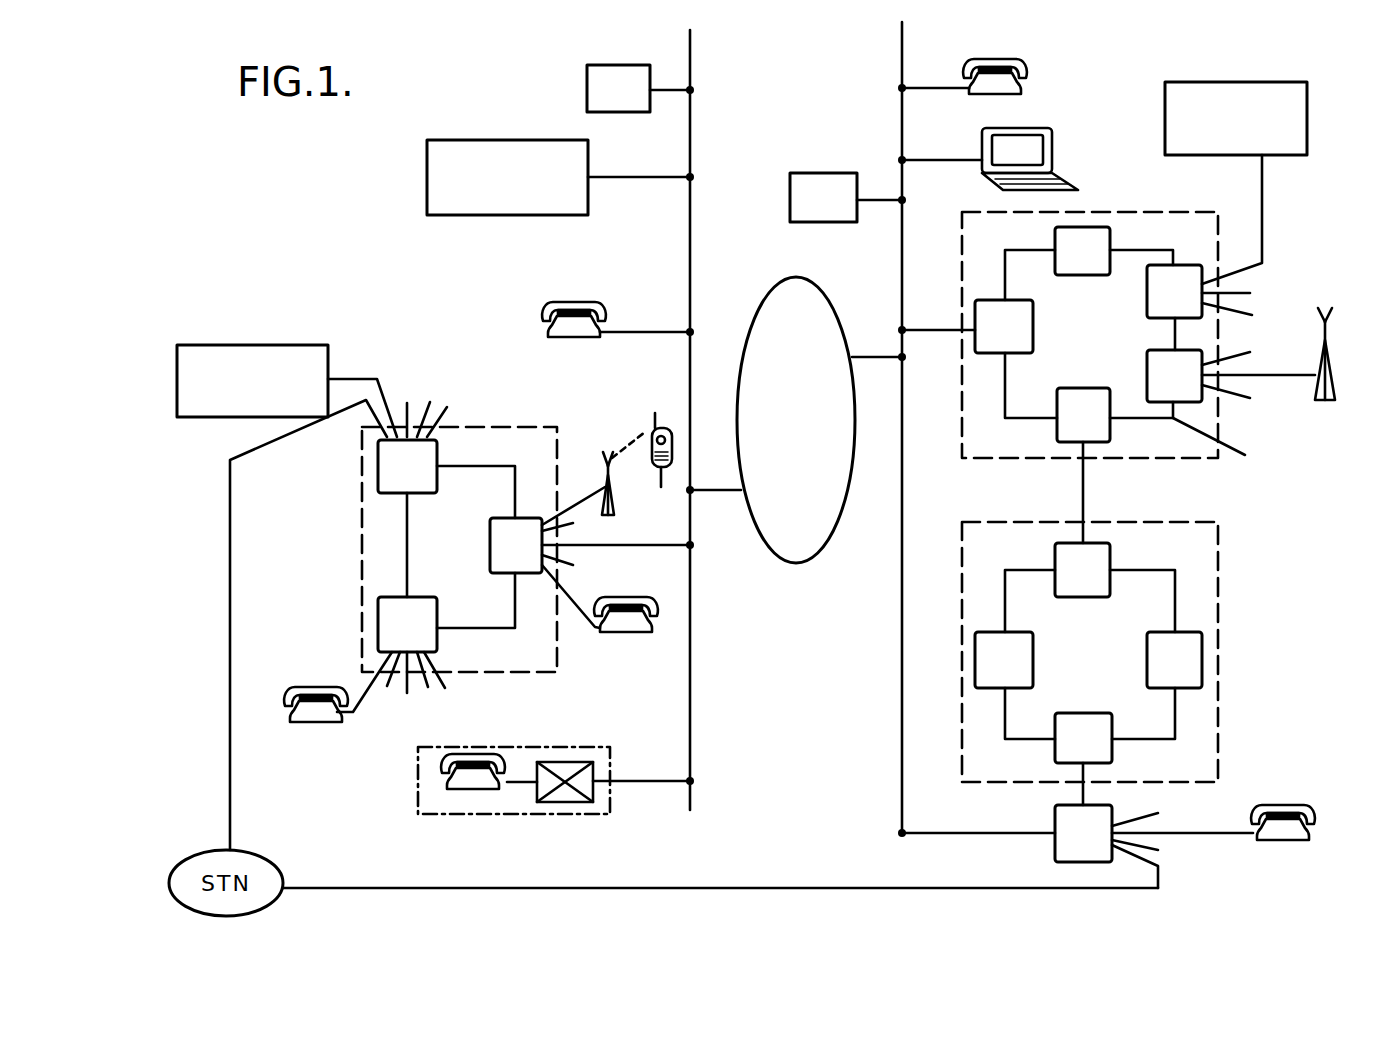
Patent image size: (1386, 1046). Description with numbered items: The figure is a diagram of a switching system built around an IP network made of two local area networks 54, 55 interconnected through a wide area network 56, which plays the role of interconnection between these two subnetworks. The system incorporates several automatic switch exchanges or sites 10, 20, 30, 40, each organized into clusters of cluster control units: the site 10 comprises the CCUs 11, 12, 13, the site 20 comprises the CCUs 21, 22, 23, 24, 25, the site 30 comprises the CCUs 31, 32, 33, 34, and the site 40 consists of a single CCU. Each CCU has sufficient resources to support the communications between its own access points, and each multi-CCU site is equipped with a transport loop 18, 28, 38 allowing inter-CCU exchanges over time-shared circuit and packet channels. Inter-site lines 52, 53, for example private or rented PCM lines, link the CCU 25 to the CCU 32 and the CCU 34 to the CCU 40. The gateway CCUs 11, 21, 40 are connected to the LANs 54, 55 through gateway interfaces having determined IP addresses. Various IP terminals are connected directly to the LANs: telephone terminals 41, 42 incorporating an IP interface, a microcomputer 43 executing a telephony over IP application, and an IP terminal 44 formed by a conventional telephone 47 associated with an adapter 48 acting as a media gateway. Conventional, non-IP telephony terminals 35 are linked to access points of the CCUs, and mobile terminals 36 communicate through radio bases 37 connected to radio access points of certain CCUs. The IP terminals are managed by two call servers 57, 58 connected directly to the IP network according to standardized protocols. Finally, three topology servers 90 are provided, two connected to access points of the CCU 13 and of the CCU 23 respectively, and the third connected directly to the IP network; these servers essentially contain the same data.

The site 10 is at (362, 545).
The cluster control unit 11 is at (490, 557).
The cluster control unit 12 is at (437, 605).
The cluster control unit 13 is at (423, 493).
The transport loop 18 is at (468, 465).
The site 20 is at (1118, 212).
The cluster control unit 21 is at (1033, 342).
The cluster control unit 22 is at (1085, 275).
The cluster control unit 23 is at (1147, 292).
The cluster control unit 24 is at (1147, 365).
The cluster control unit 25 is at (1057, 405).
The transport loop 28 is at (1227, 444).
The site 30 is at (1222, 723).
The cluster control unit 31 is at (1033, 665).
The cluster control unit 32 is at (1083, 597).
The cluster control unit 33 is at (1147, 655).
The cluster control unit 34 is at (1055, 720).
The conventional telephony terminal 35 is at (630, 633).
The mobile terminal 36 is at (646, 464).
The radio base 37 is at (1328, 400).
The transport loop 38 is at (1178, 598).
The cluster control unit 40 is at (1055, 850).
The telephone terminal 41 is at (596, 302).
The telephone terminal 42 is at (1021, 88).
The microcomputer 43 is at (1052, 145).
The IP terminal 44 is at (418, 799).
The conventional telephone 47 is at (470, 790).
The adapter 48 is at (572, 802).
The inter-site line 52 is at (1083, 490).
The inter-site line 53 is at (1078, 792).
The local area network 54 is at (689, 449).
The local area network 55 is at (967, 457).
The wide area network 56 is at (800, 563).
The call server 57 is at (586, 92).
The call server 58 is at (826, 173).
The topology server 90 is at (498, 140).